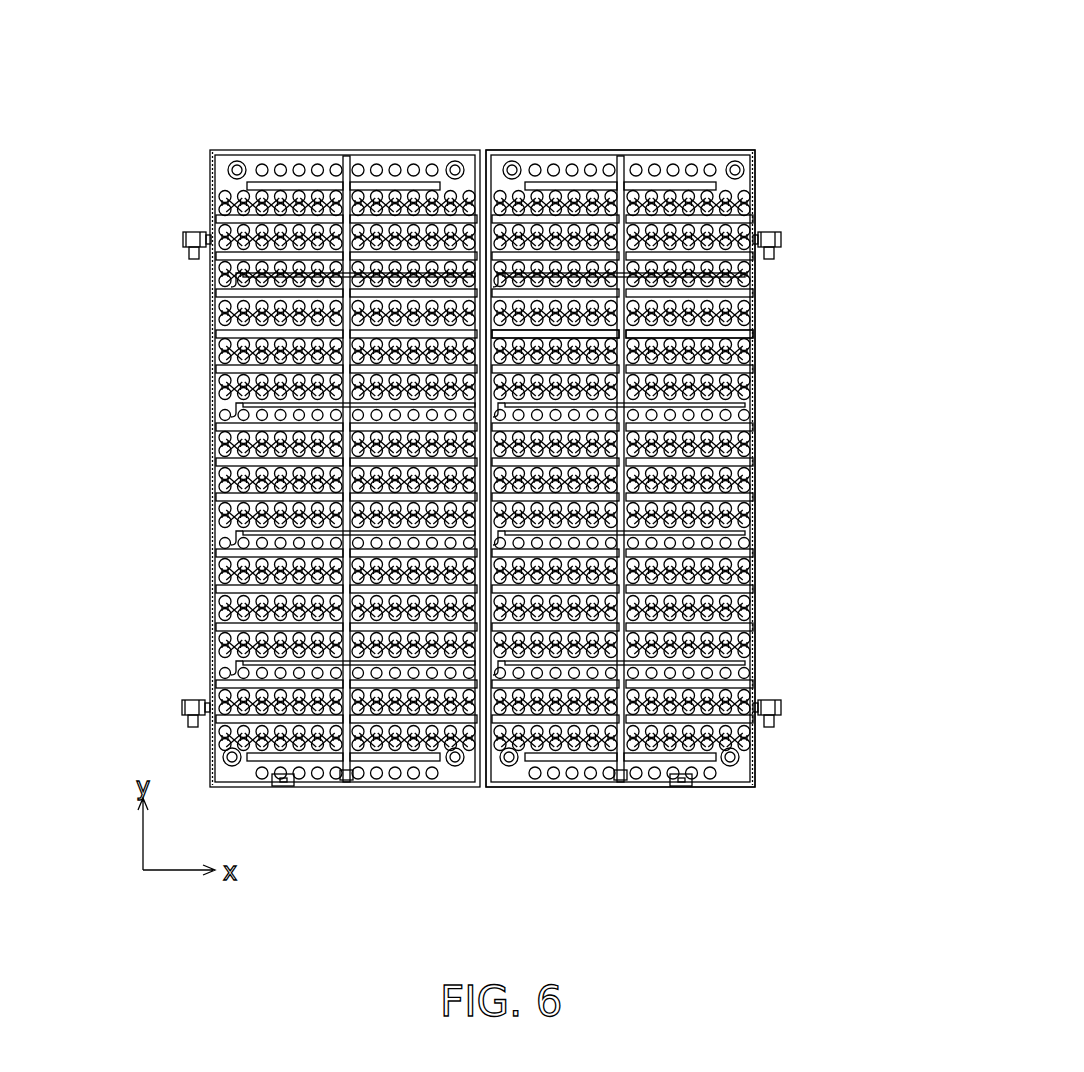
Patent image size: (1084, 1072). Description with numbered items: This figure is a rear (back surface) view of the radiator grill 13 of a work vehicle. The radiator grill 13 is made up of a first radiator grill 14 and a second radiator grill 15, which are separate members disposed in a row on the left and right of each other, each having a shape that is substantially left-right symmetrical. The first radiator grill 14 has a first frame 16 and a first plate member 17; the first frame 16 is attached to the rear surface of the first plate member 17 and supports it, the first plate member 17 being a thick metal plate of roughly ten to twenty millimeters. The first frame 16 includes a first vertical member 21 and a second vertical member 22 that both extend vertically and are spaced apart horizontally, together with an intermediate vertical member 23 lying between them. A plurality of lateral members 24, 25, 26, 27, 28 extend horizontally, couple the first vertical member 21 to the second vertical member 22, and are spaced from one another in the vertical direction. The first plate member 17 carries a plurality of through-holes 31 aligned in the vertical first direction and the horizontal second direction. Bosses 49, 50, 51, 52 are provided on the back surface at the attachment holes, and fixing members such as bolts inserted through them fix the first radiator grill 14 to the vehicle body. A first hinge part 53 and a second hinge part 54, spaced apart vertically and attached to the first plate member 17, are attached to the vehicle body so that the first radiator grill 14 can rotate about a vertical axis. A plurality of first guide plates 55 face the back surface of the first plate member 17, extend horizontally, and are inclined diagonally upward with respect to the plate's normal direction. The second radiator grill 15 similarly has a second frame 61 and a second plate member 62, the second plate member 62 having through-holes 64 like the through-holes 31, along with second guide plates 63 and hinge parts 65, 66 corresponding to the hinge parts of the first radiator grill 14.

The radiator grill 13 is at (553, 48).
The first radiator grill 14 is at (402, 130).
The second radiator grill 15 is at (560, 130).
The first frame 16 is at (196, 452).
The first plate member 17 is at (230, 385).
The first vertical member 21 is at (213, 340).
The second vertical member 22 is at (480, 774).
The intermediate vertical member 23 is at (333, 160).
The lateral member 24 is at (285, 157).
The lateral member 25 is at (235, 289).
The lateral member 26 is at (250, 428).
The lateral member 27 is at (255, 552).
The lateral member 28 is at (250, 680).
The through-holes 31 is at (245, 478).
The boss 49 is at (237, 162).
The boss 50 is at (232, 766).
The boss 51 is at (457, 160).
The boss 52 is at (450, 766).
The first hinge part 53 is at (182, 240).
The second hinge part 54 is at (181, 708).
The first guide plates 55 is at (218, 590).
The second frame 61 is at (763, 418).
The second plate member 62 is at (740, 395).
The second guide plates 63 is at (740, 355).
The through-holes 64 is at (725, 478).
The hinge part 65 is at (772, 232).
The hinge part 66 is at (772, 700).